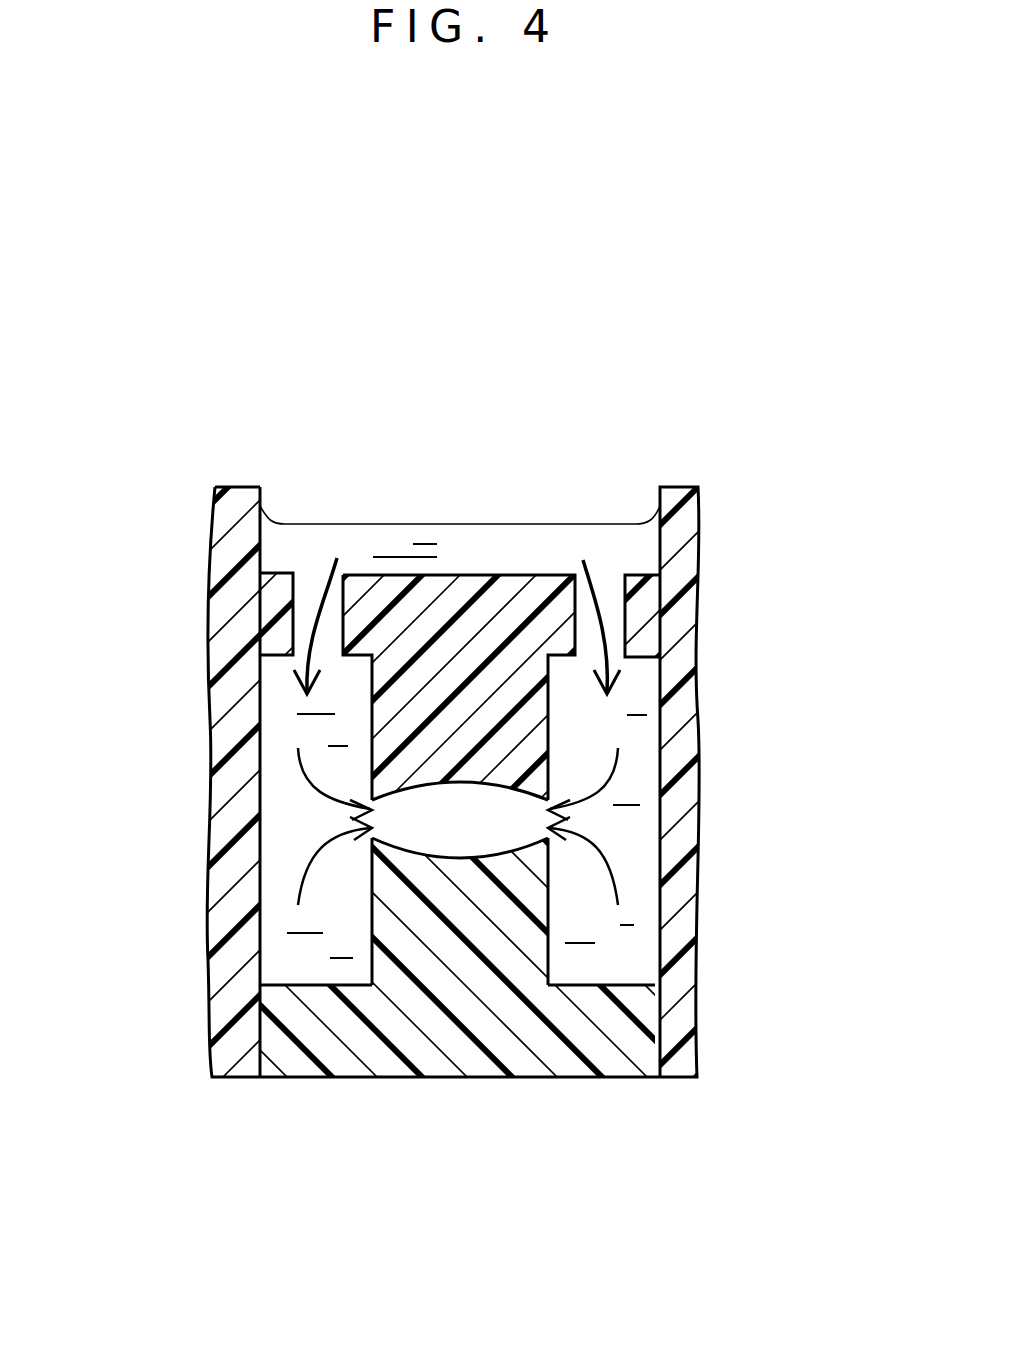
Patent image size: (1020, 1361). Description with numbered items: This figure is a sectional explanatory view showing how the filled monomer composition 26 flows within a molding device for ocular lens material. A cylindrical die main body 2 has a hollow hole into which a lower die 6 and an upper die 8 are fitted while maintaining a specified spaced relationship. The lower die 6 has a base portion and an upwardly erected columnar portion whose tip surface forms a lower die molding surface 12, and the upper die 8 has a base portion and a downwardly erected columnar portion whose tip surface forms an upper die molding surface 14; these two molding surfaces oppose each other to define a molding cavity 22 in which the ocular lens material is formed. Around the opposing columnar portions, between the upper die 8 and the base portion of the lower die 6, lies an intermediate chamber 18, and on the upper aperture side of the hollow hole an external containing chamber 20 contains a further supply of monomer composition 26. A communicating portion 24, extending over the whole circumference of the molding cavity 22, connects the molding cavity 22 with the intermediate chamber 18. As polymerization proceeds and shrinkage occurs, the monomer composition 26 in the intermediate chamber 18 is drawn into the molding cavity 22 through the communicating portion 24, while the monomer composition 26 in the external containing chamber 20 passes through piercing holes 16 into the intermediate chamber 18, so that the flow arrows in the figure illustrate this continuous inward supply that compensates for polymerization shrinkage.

The die main body 2 is at (238, 535).
The lower die 6 is at (557, 1002).
The upper die 8 is at (518, 610).
The lower die molding surface 12 is at (459, 856).
The upper die molding surface 14 is at (470, 780).
The piercing holes 16 is at (306, 570).
The intermediate chamber 18 is at (282, 672).
The external containing chamber 20 is at (355, 548).
The molding cavity 22 is at (420, 830).
The communicating portion 24 is at (505, 821).
The monomer composition 26 is at (488, 545).